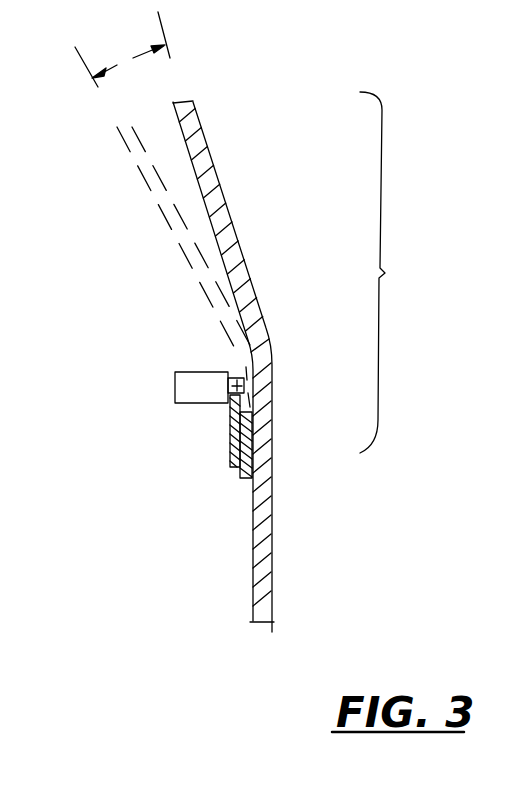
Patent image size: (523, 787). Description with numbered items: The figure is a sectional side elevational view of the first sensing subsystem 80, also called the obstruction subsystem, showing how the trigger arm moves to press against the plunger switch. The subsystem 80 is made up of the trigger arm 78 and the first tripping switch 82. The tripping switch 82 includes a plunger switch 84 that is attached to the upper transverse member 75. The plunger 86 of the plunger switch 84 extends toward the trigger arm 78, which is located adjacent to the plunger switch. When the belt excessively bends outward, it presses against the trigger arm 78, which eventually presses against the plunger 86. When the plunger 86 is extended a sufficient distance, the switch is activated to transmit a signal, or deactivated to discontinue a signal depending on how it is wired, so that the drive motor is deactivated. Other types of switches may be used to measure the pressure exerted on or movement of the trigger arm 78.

The upper transverse member 75 is at (240, 465).
The trigger arm 78 is at (213, 168).
The first sensing subsystem 80 is at (386, 272).
The first tripping switch 82 is at (105, 322).
The plunger switch 84 is at (175, 382).
The plunger 86 is at (242, 378).